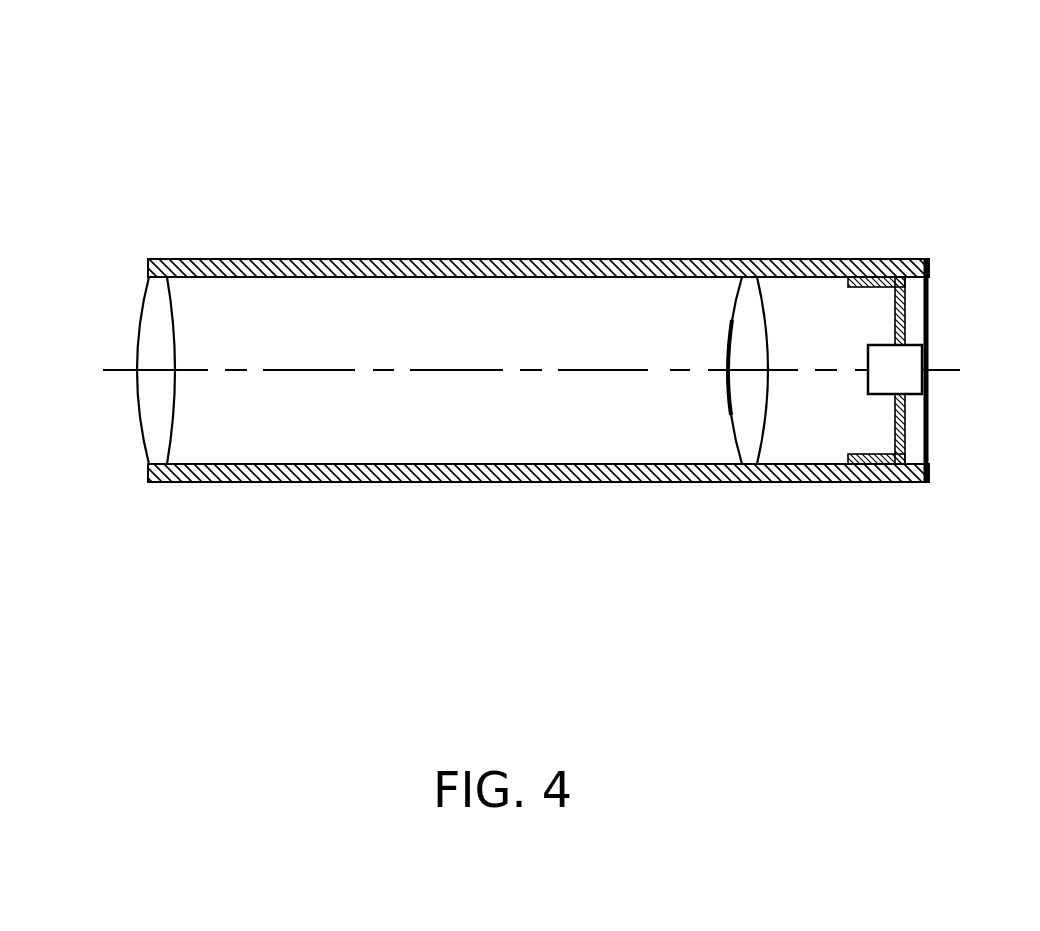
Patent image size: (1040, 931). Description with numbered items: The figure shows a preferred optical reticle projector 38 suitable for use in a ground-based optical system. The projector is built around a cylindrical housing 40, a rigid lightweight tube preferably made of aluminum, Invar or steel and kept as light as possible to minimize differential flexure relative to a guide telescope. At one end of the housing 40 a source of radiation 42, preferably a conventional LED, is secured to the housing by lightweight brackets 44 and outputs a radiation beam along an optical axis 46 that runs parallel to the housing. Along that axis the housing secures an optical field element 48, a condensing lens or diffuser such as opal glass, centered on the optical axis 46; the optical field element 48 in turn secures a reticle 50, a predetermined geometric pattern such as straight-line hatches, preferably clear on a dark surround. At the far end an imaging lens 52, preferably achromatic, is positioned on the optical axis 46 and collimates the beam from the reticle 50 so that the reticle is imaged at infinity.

The optical reticle projector 38 is at (537, 180).
The cylindrical housing 40 is at (490, 482).
The source of radiation 42 is at (917, 383).
The brackets 44 is at (907, 317).
The optical axis 46 is at (343, 368).
The optical field element 48 is at (767, 327).
The reticle 50 is at (727, 383).
The imaging lens 52 is at (140, 433).